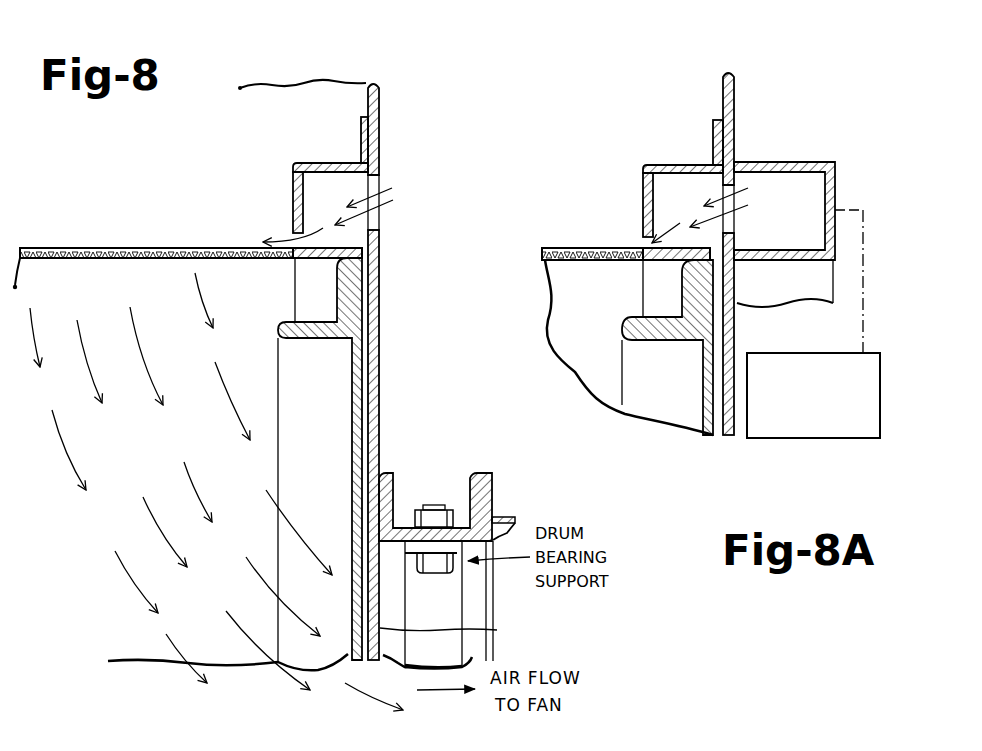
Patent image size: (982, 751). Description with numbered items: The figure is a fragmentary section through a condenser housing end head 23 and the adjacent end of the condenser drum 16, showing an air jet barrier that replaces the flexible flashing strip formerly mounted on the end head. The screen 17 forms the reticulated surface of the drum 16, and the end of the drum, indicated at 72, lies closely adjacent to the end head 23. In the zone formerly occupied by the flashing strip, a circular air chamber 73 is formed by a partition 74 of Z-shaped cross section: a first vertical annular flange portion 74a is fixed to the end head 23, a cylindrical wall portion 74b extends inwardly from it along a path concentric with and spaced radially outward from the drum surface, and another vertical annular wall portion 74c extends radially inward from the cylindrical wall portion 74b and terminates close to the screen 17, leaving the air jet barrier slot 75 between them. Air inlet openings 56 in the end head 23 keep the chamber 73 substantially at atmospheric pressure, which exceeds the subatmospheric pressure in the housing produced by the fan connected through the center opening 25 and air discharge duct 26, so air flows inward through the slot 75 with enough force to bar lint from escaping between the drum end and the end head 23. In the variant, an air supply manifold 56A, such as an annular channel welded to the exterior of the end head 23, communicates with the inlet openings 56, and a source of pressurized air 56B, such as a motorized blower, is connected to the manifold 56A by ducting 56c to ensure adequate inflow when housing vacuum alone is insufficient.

In FIG. 8, the condenser drum 16 is at (100, 245).
In FIG. 8A, the condenser drum 16 is at (541, 273).
In FIG. 8, the condenser screen 17 is at (155, 247).
In FIG. 8A, the condenser screen 17 is at (561, 248).
In FIG. 8, the condenser end head 23 is at (379, 318).
In FIG. 8A, the condenser end head 23 is at (736, 340).
In FIG. 8, the center opening 25 is at (453, 633).
In FIG. 8, the air discharge duct 26 is at (500, 518).
In FIG. 8, the air inlet openings 56 is at (380, 219).
In FIG. 8A, the air inlet openings 56 is at (736, 224).
In FIG. 8A, the air supply manifold 56A is at (790, 162).
In FIG. 8A, the source of pressurized air 56B is at (831, 438).
In FIG. 8A, the ducting 56c is at (864, 226).
In FIG. 8, the end of the condenser drum 72 is at (352, 382).
In FIG. 8A, the end of the condenser drum 72 is at (667, 347).
In FIG. 8, the air chamber 73 is at (342, 187).
In FIG. 8A, the air chamber 73 is at (700, 202).
In FIG. 8, the partition 74 is at (294, 163).
In FIG. 8A, the partition 74 is at (648, 154).
In FIG. 8, the first vertical annular flange portion 74a is at (361, 132).
In FIG. 8A, the first vertical annular flange portion 74a is at (717, 130).
In FIG. 8, the cylindrical wall portion 74b is at (318, 163).
In FIG. 8A, the cylindrical wall portion 74b is at (667, 165).
In FIG. 8, the vertical annular wall portion 74c is at (293, 185).
In FIG. 8A, the vertical annular wall portion 74c is at (643, 160).
In FIG. 8, the air jet barrier slot 75 is at (292, 238).
In FIG. 8A, the air jet barrier slot 75 is at (643, 241).